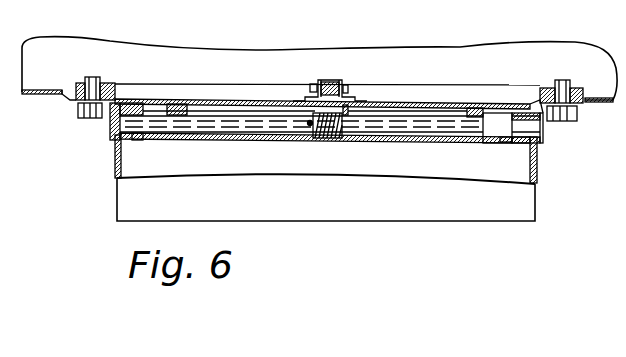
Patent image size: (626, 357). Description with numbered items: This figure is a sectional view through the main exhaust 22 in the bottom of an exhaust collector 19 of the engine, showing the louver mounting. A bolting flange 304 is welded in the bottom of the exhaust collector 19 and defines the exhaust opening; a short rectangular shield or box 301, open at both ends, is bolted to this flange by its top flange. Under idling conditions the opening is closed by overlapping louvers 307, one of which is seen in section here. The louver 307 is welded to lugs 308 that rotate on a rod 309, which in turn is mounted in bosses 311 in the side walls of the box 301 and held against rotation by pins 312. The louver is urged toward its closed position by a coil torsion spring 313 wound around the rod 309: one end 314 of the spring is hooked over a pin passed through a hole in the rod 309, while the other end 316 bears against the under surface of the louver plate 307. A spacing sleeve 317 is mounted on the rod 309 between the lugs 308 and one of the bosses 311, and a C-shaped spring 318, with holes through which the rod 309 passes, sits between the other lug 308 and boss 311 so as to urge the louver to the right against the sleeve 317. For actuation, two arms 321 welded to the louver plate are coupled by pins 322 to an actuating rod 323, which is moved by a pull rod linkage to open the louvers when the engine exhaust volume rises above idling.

The exhaust collector 19 is at (50, 80).
The main exhaust 22 is at (486, 220).
The shield or box 301 is at (122, 203).
The bolting flange 304 is at (79, 85).
The louver 307 is at (230, 104).
The lug 308 is at (183, 134).
The rod 309 is at (270, 123).
The boss 311 is at (127, 140).
The pin 312 is at (133, 127).
The coil torsion spring 313 is at (337, 136).
The spring end 314 is at (309, 126).
The spring end 316 is at (347, 112).
The spacing sleeve 317 is at (488, 128).
The C-shaped spring 318 is at (163, 142).
The arm 321 is at (316, 85).
The pin 322 is at (348, 88).
The actuating rod 323 is at (330, 82).